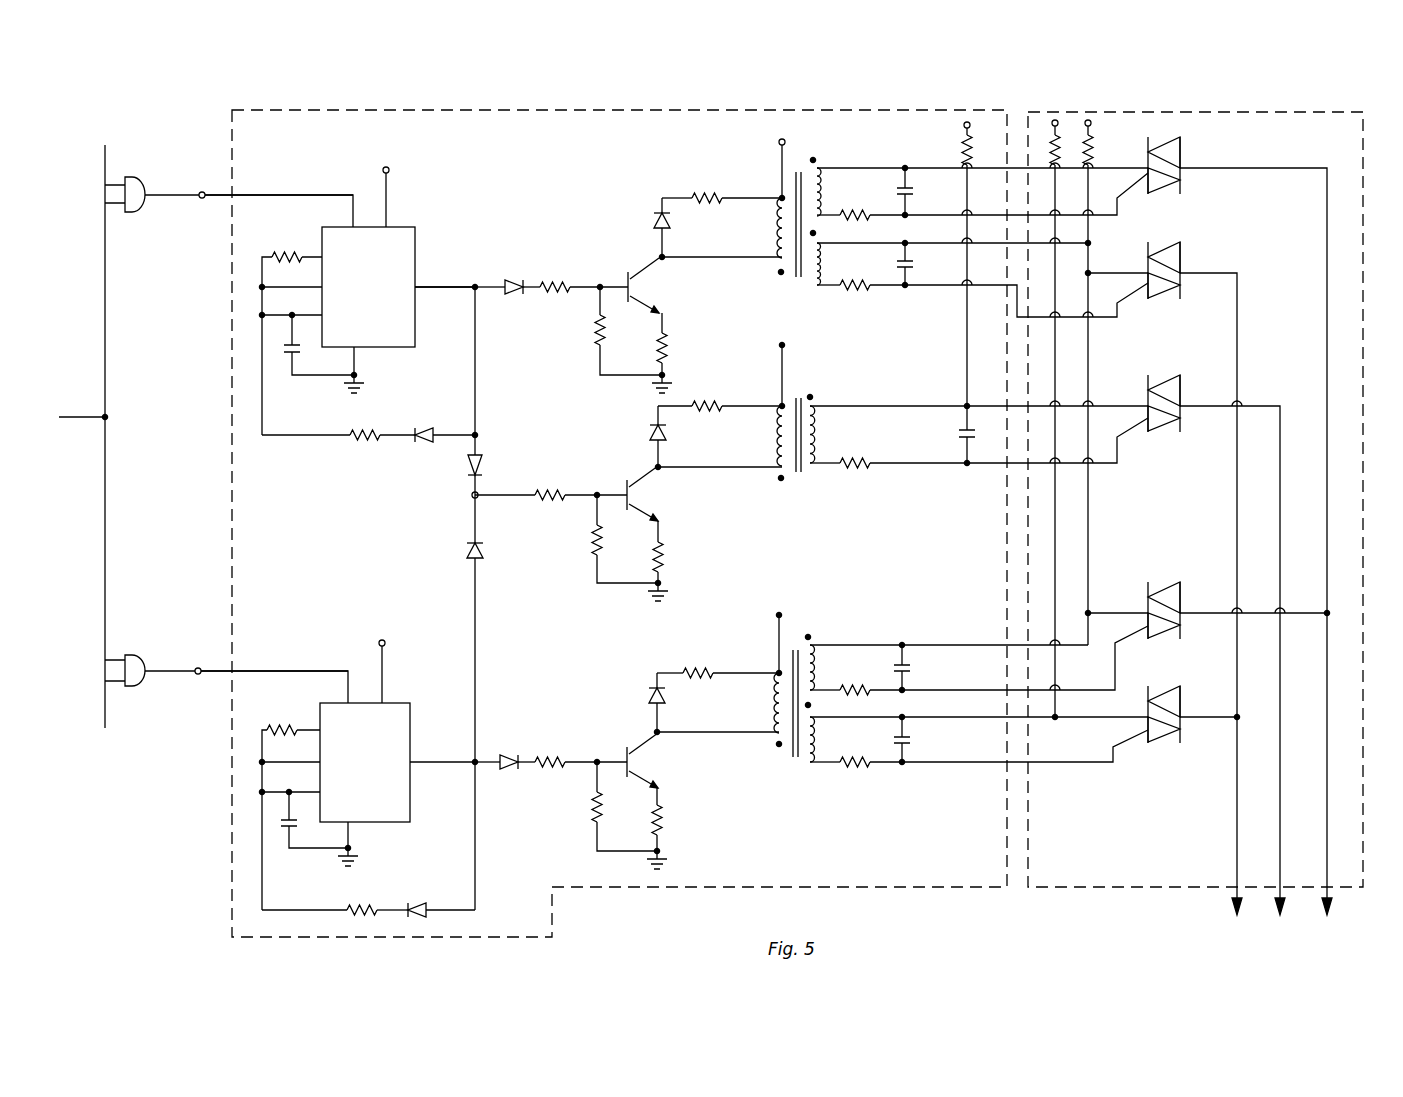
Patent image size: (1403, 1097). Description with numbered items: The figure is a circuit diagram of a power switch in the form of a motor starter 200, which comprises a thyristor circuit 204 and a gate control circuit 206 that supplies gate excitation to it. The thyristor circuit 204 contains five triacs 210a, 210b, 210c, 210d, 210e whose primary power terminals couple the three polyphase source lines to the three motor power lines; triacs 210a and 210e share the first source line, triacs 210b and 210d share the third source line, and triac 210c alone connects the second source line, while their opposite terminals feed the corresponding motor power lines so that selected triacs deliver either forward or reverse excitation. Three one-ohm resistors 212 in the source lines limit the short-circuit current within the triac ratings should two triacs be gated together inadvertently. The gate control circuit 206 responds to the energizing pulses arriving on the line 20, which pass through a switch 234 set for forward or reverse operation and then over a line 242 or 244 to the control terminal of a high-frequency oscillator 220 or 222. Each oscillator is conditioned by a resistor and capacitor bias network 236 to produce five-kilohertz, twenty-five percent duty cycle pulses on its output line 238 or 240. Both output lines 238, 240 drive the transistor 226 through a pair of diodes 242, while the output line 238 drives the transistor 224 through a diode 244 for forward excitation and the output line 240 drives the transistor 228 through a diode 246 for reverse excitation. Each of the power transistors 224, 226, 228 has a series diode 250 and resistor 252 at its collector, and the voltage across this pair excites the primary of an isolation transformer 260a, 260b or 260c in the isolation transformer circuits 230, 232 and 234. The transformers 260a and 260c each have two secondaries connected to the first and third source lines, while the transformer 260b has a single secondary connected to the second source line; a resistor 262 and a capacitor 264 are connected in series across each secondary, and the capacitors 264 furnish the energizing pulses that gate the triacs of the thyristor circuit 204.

The motor starter 200 is at (247, 104).
The line 20 is at (64, 416).
The switch 234 is at (142, 211).
The line 242 is at (263, 195).
The high-frequency oscillator 220 is at (409, 227).
The timing capacitor network 236 is at (285, 378).
The output line 238 is at (422, 287).
The line 244 is at (512, 280).
The power-switching transistor 224 is at (655, 257).
The power-switching transistor 226 is at (657, 518).
The power-switching transistor 228 is at (656, 786).
The diode 246 is at (508, 755).
The output line 240 is at (418, 762).
The high-frequency oscillator 222 is at (398, 703).
The diode 250 is at (658, 218).
The resistor 252 is at (721, 200).
The isolation transformer circuit 230 is at (808, 302).
The isolation transformer 260a is at (797, 170).
The isolation transformer circuit 232 is at (797, 478).
The isolation transformer 260b is at (803, 399).
The isolation transformer 260c is at (798, 640).
The resistor 262 is at (878, 278).
The capacitor 264 is at (899, 184).
The one-ohm resistor 212 is at (962, 123).
The triac 210a is at (1178, 157).
The triac 210b is at (1178, 260).
The triac 210c is at (1165, 384).
The triac 210d is at (1163, 592).
The triac 210e is at (1163, 698).
The gate control circuit 206 is at (619, 513).
The thyristor circuit 204 is at (1195, 488).